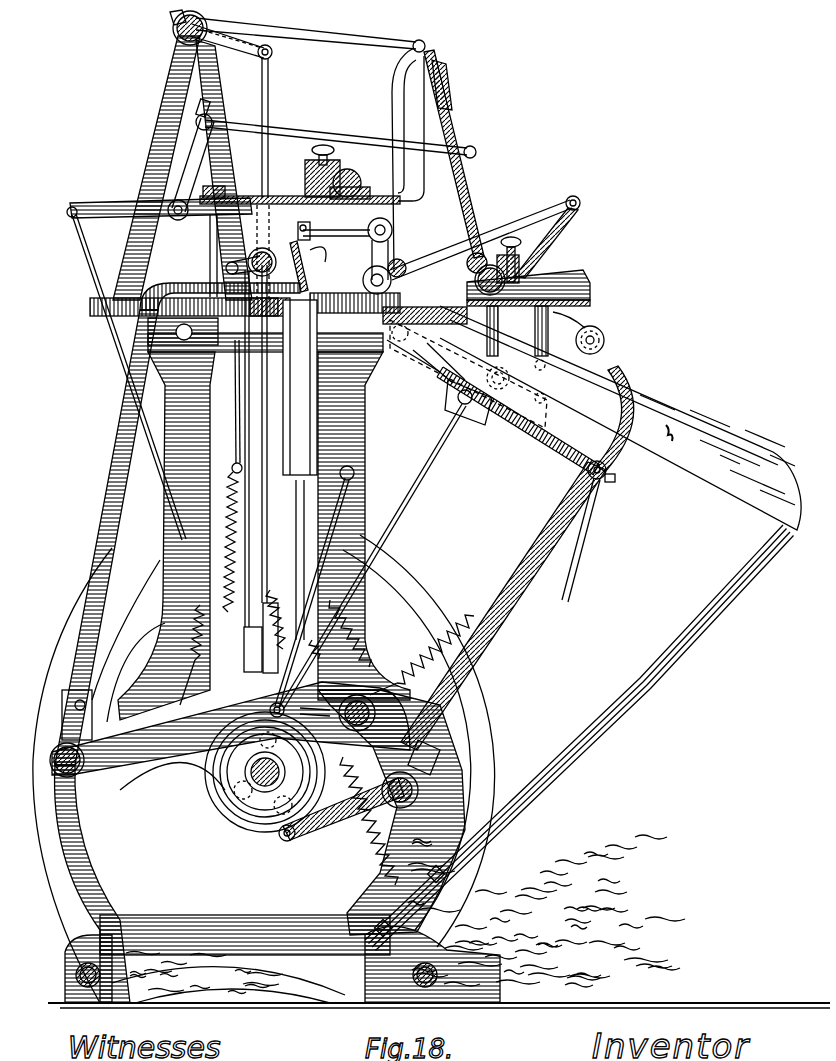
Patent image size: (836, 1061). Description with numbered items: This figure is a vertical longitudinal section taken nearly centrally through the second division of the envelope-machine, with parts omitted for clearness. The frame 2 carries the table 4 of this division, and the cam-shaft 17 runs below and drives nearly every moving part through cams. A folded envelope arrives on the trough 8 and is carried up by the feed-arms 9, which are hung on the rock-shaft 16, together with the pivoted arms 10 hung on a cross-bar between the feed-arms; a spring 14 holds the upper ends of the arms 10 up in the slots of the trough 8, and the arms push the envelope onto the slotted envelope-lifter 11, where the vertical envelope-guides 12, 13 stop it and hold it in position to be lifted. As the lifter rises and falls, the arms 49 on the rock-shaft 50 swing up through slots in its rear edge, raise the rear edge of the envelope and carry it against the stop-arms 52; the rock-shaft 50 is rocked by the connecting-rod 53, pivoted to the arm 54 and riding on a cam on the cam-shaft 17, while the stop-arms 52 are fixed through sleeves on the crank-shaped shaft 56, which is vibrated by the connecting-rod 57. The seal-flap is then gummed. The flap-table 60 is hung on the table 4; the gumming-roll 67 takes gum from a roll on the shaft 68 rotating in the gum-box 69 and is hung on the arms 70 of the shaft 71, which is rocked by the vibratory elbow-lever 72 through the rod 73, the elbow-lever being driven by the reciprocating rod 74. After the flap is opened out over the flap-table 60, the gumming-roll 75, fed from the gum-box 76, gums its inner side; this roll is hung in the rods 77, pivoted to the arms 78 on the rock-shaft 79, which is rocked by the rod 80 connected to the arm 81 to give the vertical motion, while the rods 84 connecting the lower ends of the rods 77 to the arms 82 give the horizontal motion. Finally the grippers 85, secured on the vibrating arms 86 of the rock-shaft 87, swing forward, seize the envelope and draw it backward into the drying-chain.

The frame 2 is at (264, 769).
The table 4 is at (90, 306).
The trough 8 is at (668, 436).
The feed-arms 9 is at (553, 532).
The pivoted arms 10 is at (594, 418).
The slotted envelope-lifter 11 is at (264, 526).
The vertical envelope-guide 12 is at (419, 321).
The vertical envelope-guide 13 is at (300, 387).
The spring 14 is at (498, 606).
The rock-shaft 16 is at (355, 790).
The cam-shaft 17 is at (240, 782).
The arms 49 is at (308, 266).
The rock-shaft 50 is at (246, 262).
The stop-arms 52 is at (334, 236).
The connecting-rod 53 is at (213, 522).
The arm 54 is at (245, 258).
The crank-shaped shaft 56 is at (373, 248).
The connecting-rod 57 is at (370, 557).
The flap-table 60 is at (468, 372).
The gumming-roll 67 is at (468, 264).
The shaft 68 is at (476, 284).
The gum-box 69 is at (580, 276).
The arms 70 is at (454, 154).
The shaft 71 is at (430, 55).
The vibratory elbow-lever 72 is at (186, 159).
The rod 73 is at (340, 133).
The rod 74 is at (114, 335).
The gumming-roll 75 is at (386, 220).
The gum-box 76 is at (327, 179).
The rods 77 is at (393, 88).
The arms 78 is at (306, 32).
The rock-shaft 79 is at (176, 36).
The rod 80 is at (318, 152).
The arm 81 is at (231, 111).
The arms 82 is at (552, 245).
The rods 84 is at (498, 228).
The grippers 85 is at (290, 250).
The vibrating arms 86 is at (116, 458).
The rock-shaft 87 is at (52, 766).